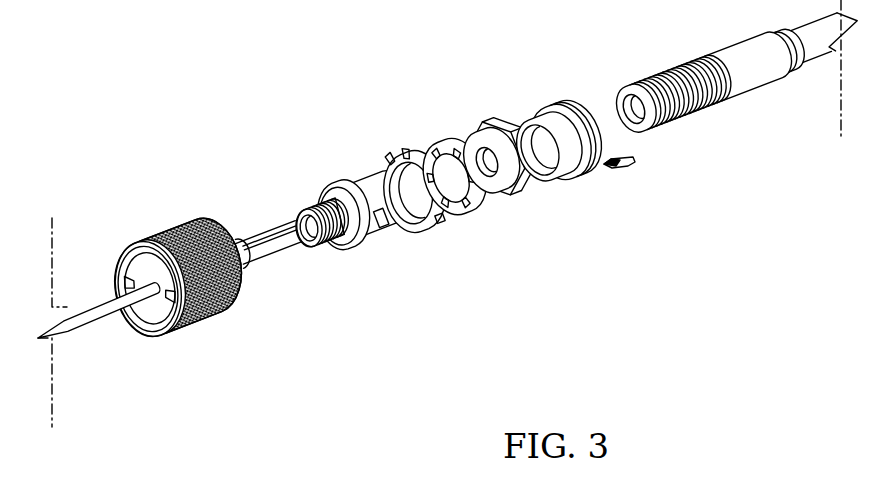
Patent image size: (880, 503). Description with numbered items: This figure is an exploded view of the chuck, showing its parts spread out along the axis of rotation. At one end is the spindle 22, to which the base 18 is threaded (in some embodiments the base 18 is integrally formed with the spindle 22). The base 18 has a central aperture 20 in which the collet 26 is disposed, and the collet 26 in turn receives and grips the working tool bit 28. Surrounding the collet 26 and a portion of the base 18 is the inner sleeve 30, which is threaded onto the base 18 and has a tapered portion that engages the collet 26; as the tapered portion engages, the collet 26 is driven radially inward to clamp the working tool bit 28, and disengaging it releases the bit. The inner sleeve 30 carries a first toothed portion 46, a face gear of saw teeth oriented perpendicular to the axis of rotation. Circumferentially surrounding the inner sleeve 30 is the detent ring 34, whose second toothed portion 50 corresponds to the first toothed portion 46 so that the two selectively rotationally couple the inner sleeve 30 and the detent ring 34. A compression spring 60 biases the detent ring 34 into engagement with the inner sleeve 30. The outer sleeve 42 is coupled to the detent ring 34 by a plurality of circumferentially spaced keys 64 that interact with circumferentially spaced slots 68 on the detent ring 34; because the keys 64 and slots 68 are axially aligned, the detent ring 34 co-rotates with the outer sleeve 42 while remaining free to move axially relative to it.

The base 18 is at (375, 235).
The central aperture 20 is at (313, 238).
The spindle 22 is at (735, 93).
The collet 26 is at (283, 222).
The working tool bit 28 is at (91, 300).
The inner sleeve 30 is at (483, 130).
The detent ring 34 is at (457, 210).
The outer sleeve 42 is at (208, 318).
The first toothed portion 46 is at (508, 127).
The second toothed portion 50 is at (462, 153).
The compression spring 60 is at (567, 103).
The keys 64 is at (148, 237).
The slots 68 is at (487, 173).